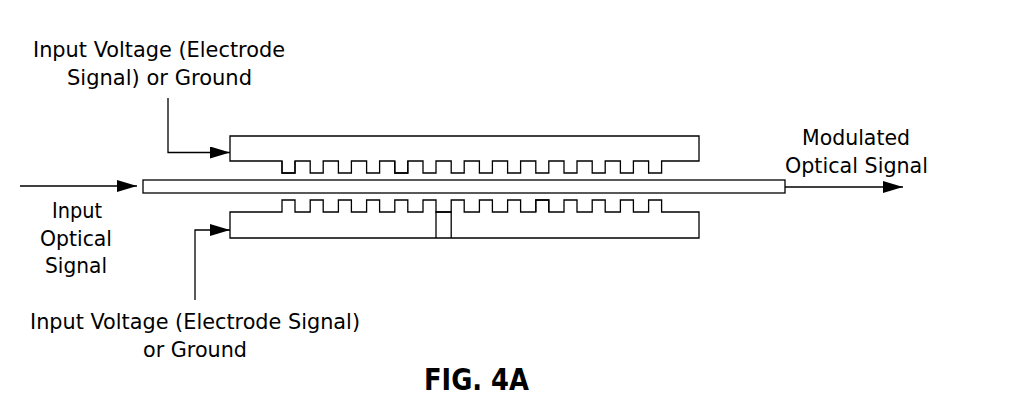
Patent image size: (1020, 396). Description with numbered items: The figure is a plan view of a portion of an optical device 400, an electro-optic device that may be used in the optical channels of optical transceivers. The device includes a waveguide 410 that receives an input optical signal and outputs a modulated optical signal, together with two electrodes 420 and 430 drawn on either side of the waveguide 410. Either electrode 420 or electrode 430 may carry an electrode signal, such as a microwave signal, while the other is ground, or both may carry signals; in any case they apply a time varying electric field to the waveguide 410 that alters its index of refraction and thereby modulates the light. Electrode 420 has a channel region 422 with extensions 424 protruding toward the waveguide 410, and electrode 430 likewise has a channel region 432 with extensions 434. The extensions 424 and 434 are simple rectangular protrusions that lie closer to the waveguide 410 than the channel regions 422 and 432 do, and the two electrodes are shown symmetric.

The optical device 400 is at (458, 21).
The waveguide 410 is at (192, 193).
The electrode 420 is at (267, 238).
The channel region 422 is at (443, 222).
The extensions 424 is at (532, 212).
The electrode 430 is at (493, 135).
The channel region 432 is at (393, 135).
The extensions 434 is at (288, 159).